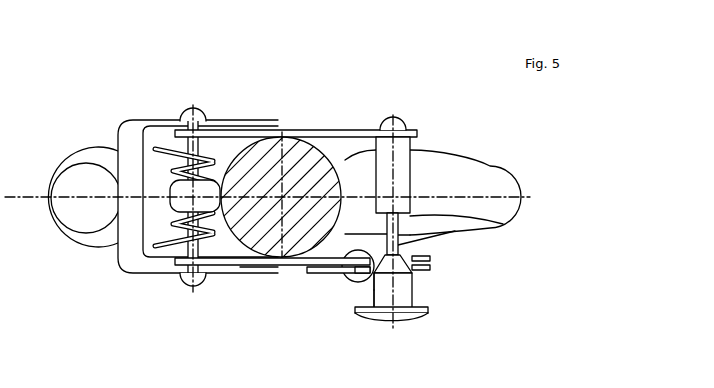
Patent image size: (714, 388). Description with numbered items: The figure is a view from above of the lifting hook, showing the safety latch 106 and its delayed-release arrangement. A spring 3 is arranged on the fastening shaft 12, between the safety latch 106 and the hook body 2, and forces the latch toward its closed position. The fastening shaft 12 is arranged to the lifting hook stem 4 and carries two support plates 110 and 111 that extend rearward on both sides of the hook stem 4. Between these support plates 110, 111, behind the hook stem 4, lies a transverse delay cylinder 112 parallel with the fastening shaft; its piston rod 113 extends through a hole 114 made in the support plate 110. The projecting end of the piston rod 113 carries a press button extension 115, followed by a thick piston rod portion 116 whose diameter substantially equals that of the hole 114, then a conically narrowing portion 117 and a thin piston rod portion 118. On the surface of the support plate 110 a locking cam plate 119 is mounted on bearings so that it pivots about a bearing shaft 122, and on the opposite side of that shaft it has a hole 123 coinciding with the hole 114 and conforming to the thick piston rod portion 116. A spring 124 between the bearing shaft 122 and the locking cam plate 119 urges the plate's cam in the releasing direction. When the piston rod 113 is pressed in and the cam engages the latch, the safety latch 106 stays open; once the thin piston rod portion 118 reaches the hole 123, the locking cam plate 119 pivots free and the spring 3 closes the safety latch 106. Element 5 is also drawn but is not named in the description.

The hook body 2 is at (513, 172).
The spring 3 is at (163, 148).
The lifting hook stem 4 is at (310, 138).
The ball 5 is at (65, 182).
The fastening shaft 12 is at (192, 105).
The safety latch 106 is at (106, 274).
The support plate 110 is at (300, 270).
The support plate 111 is at (347, 132).
The delay cylinder 112 is at (419, 173).
The piston rod 113 is at (415, 284).
The hole 114 is at (411, 256).
The press button extension 115 is at (405, 324).
The thick piston rod portion 116 is at (413, 296).
The conically narrowing portion 117 is at (406, 252).
The thin piston rod portion 118 is at (404, 222).
The locking cam plate 119 is at (322, 275).
The bearing shaft 122 is at (345, 251).
The hole 123 is at (368, 280).
The spring 124 is at (341, 273).